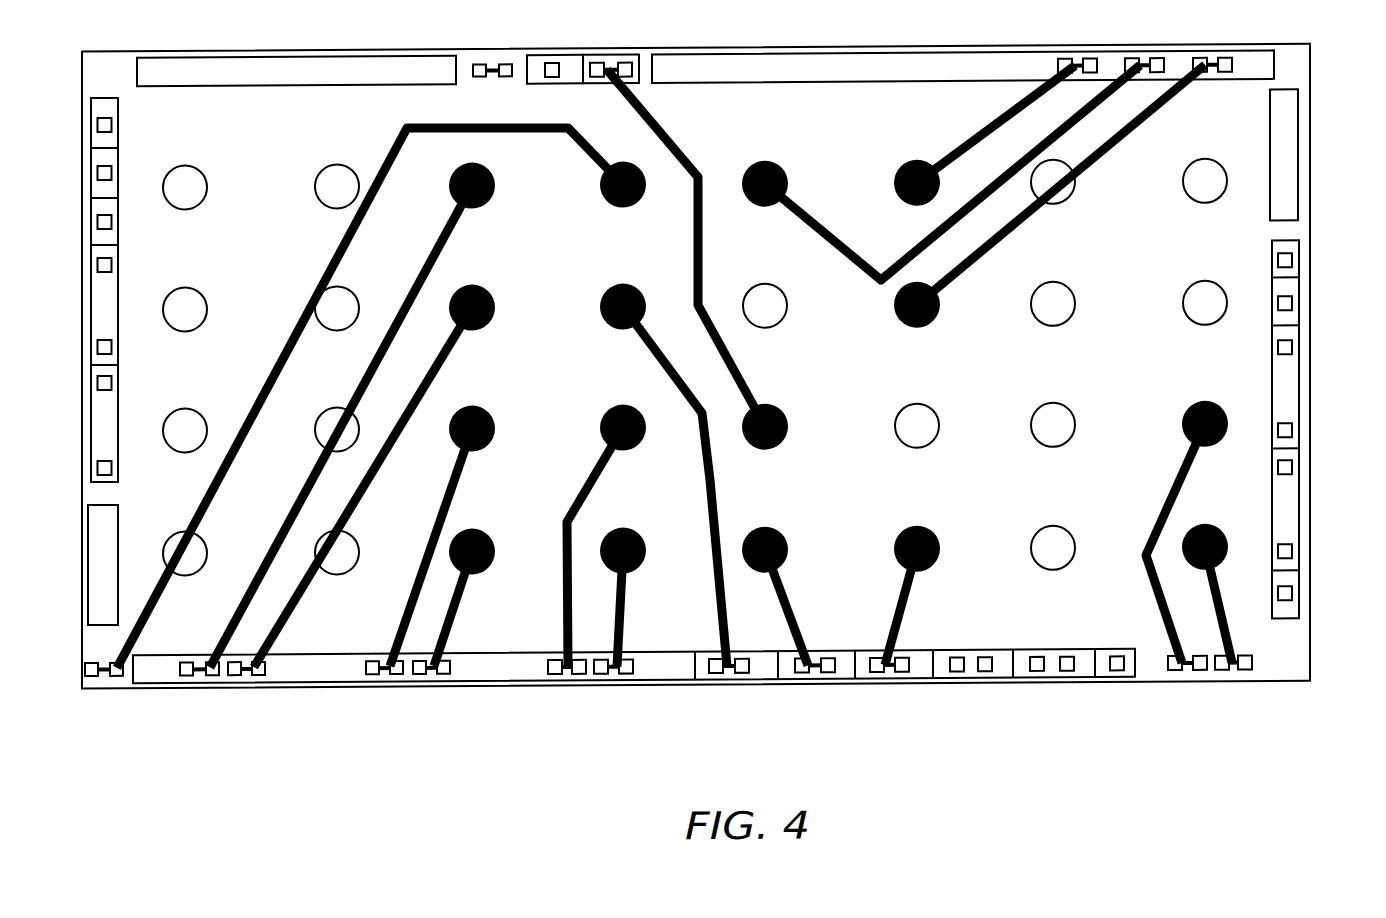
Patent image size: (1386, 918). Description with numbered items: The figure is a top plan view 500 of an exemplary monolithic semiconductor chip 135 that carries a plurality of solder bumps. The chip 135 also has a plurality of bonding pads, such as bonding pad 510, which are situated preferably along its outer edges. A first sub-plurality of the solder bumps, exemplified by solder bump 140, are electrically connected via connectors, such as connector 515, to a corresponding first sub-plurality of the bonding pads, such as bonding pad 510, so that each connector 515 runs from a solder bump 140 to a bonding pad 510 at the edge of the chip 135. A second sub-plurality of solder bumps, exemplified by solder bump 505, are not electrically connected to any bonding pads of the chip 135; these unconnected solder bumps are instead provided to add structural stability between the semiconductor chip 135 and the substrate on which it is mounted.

The top plan view 500 is at (728, 415).
The solder bump 505 is at (1219, 205).
The solder bump 140 is at (1224, 424).
The monolithic semiconductor chip 135 is at (1310, 528).
The connector 515 is at (1227, 627).
The bonding pad 510 is at (1237, 672).